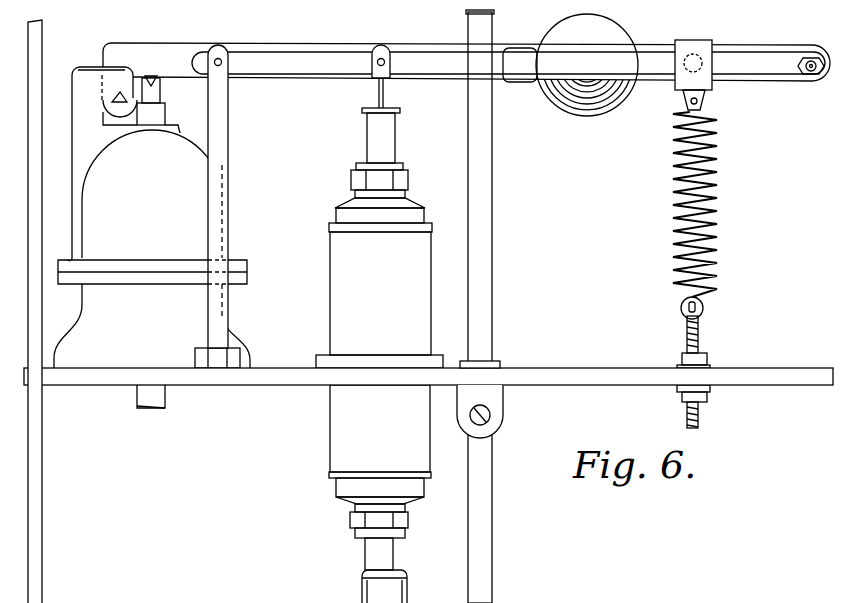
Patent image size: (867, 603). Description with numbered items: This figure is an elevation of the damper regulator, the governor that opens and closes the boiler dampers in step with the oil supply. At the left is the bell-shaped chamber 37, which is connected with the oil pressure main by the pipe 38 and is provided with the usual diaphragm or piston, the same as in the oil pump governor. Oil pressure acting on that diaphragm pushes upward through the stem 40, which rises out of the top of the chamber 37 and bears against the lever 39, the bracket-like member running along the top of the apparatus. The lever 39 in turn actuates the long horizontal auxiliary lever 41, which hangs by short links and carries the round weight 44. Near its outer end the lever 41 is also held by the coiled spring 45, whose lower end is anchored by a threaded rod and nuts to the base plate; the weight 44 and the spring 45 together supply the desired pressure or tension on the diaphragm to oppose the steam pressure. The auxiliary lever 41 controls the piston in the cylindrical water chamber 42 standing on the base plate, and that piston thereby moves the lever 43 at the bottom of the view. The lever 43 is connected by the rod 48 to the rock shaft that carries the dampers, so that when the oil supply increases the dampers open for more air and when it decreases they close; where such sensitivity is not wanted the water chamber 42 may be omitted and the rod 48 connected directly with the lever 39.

The chamber 37 is at (104, 158).
The pipe 38 is at (152, 408).
The lever 39 is at (164, 48).
The stem 40 is at (162, 93).
The auxiliary lever 41 is at (307, 68).
The water chamber 42 is at (432, 268).
The lever 43 is at (340, 570).
The weight 44 is at (628, 40).
The spring 45 is at (718, 170).
The rod 48 is at (45, 532).